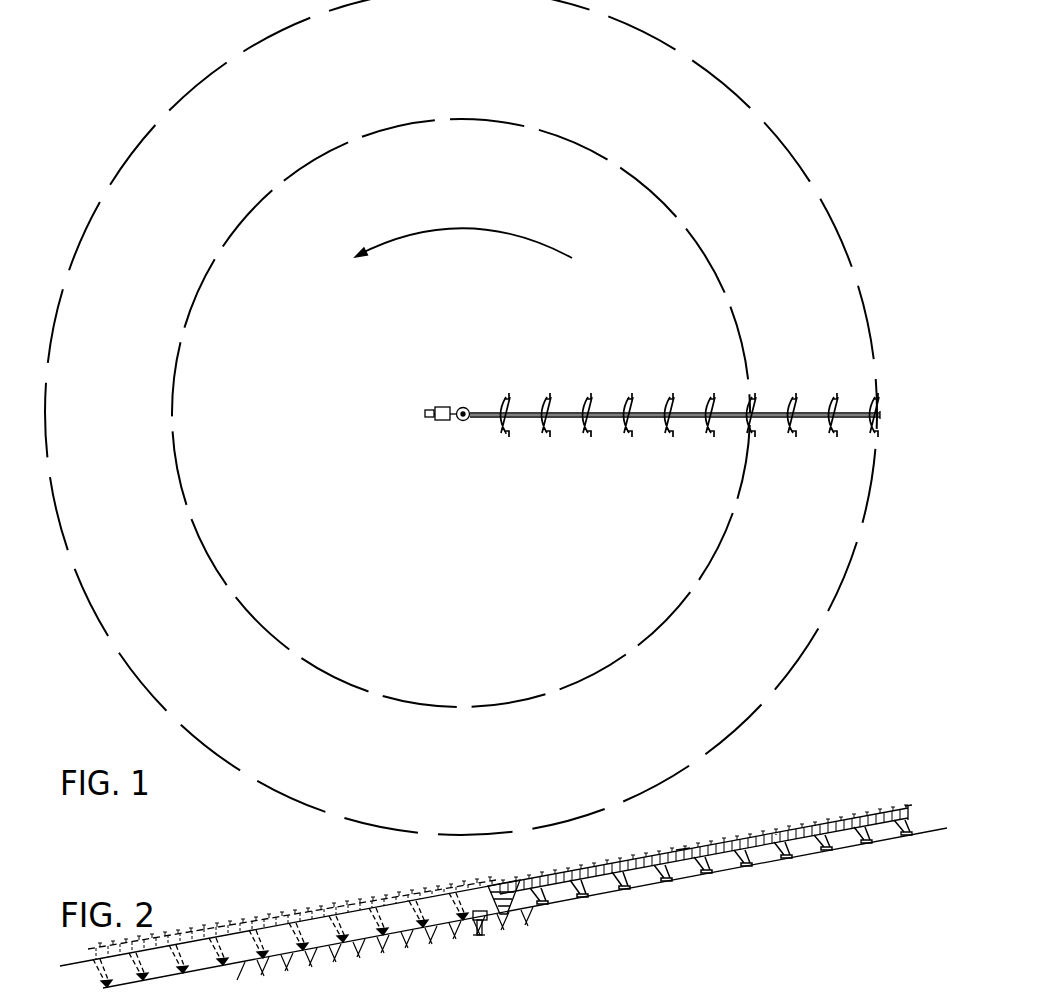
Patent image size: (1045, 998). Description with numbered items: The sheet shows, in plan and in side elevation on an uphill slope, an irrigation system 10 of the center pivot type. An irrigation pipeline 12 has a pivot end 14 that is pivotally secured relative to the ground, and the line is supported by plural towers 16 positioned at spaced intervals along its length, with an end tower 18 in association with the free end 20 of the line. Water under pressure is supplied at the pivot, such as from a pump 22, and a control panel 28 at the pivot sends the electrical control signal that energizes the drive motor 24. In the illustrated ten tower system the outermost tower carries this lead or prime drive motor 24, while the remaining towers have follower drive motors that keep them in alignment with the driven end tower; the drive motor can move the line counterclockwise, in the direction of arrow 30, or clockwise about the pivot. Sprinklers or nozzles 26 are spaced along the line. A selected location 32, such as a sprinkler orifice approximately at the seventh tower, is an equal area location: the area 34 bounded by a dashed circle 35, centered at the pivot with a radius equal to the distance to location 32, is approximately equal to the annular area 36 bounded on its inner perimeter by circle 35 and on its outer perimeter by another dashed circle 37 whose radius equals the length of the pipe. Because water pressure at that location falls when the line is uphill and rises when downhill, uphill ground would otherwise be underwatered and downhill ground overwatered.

In FIG. 1, the irrigation system 10 is at (498, 355).
In FIG. 2, the irrigation system 10 is at (801, 789).
In FIG. 1, the irrigation pipeline 12 is at (608, 418).
In FIG. 2, the irrigation pipeline 12 is at (848, 813).
In FIG. 1, the pivot end 14 is at (462, 406).
In FIG. 2, the pivot end 14 is at (500, 889).
In FIG. 1, the towers 16 is at (586, 396).
In FIG. 2, the towers 16 is at (626, 889).
In FIG. 1, the end tower 18 is at (874, 397).
In FIG. 2, the end tower 18 is at (905, 820).
In FIG. 1, the free end 20 is at (881, 417).
In FIG. 2, the free end 20 is at (908, 805).
In FIG. 1, the pump 22 is at (428, 421).
In FIG. 2, the pump 22 is at (480, 936).
In FIG. 2, the drive motor 24 is at (903, 838).
In FIG. 1, the sprinklers or nozzles 26 is at (541, 400).
In FIG. 2, the sprinklers or nozzles 26 is at (690, 846).
In FIG. 1, the control panel 28 is at (443, 421).
In FIG. 2, the control panel 28 is at (495, 918).
In FIG. 1, the arrow 30 is at (470, 222).
In FIG. 1, the selected location 32 is at (742, 437).
In FIG. 2, the selected location 32 is at (771, 826).
In FIG. 1, the area 34 is at (313, 421).
In FIG. 1, the circle 35 is at (246, 598).
In FIG. 1, the annular area 36 is at (296, 731).
In FIG. 1, the outer circle 37 is at (362, 821).